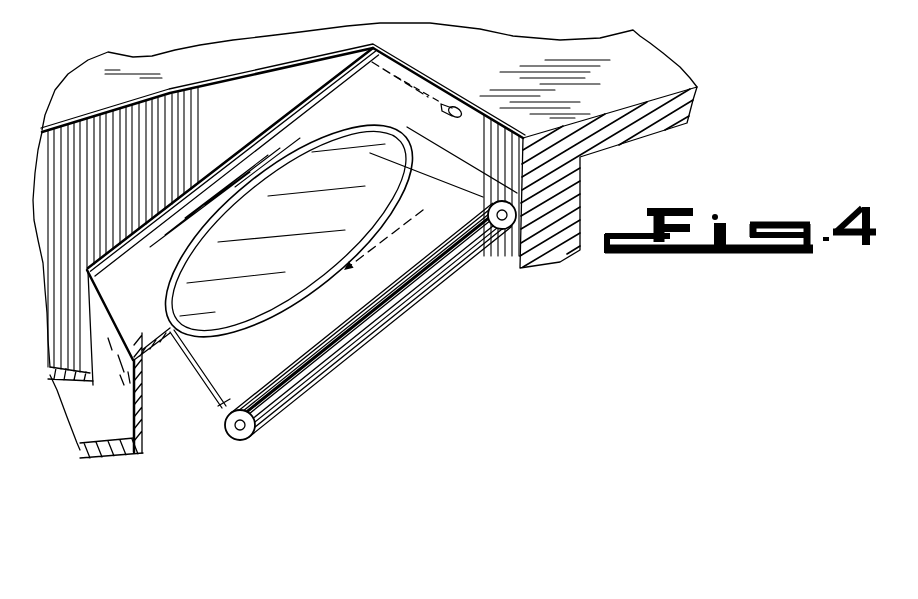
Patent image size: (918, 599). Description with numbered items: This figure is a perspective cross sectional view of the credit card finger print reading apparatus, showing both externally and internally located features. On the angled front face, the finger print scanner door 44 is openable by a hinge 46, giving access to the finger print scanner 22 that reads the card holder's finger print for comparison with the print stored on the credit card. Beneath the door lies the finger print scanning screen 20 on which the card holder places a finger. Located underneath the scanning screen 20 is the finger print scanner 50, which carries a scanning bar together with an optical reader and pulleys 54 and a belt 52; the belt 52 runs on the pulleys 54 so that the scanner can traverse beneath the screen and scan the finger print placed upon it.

The fingerprint scanning screen 20 is at (182, 318).
The finger print scanner 22 is at (168, 243).
The finger print scanner door 44 is at (347, 97).
The hinge 46 is at (458, 102).
The finger print scanner 50 is at (346, 394).
The belt 52 is at (400, 317).
The pulleys 54 is at (500, 229).